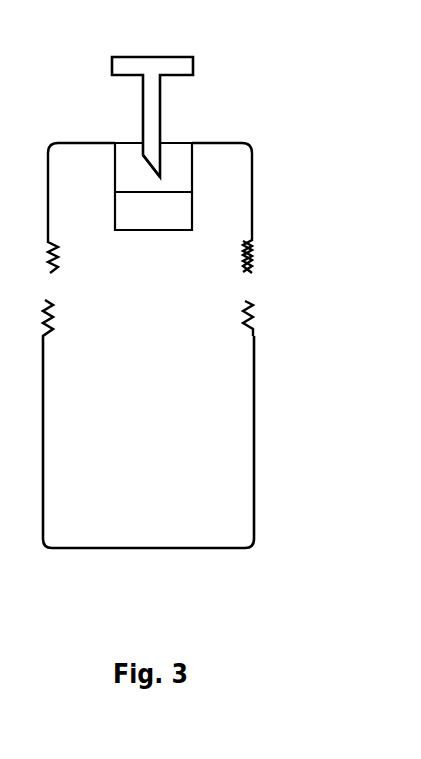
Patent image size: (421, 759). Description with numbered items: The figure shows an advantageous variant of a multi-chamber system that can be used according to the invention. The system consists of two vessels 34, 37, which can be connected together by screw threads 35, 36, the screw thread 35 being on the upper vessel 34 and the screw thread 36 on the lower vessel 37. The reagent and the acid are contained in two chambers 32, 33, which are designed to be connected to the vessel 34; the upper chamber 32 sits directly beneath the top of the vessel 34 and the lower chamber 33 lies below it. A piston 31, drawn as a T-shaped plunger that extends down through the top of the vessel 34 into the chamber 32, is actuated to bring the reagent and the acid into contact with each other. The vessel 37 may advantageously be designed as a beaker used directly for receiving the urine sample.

The piston 31 is at (193, 63).
The chamber 32 is at (178, 182).
The chamber 33 is at (168, 220).
The vessel 34 is at (252, 210).
The screw thread 35 is at (247, 258).
The screw thread 36 is at (250, 312).
The vessel 37 is at (254, 465).